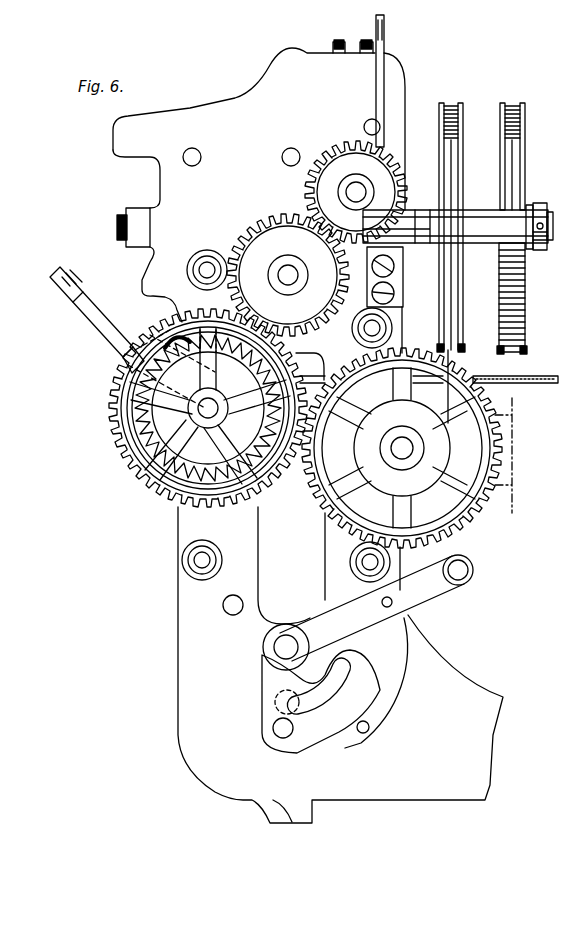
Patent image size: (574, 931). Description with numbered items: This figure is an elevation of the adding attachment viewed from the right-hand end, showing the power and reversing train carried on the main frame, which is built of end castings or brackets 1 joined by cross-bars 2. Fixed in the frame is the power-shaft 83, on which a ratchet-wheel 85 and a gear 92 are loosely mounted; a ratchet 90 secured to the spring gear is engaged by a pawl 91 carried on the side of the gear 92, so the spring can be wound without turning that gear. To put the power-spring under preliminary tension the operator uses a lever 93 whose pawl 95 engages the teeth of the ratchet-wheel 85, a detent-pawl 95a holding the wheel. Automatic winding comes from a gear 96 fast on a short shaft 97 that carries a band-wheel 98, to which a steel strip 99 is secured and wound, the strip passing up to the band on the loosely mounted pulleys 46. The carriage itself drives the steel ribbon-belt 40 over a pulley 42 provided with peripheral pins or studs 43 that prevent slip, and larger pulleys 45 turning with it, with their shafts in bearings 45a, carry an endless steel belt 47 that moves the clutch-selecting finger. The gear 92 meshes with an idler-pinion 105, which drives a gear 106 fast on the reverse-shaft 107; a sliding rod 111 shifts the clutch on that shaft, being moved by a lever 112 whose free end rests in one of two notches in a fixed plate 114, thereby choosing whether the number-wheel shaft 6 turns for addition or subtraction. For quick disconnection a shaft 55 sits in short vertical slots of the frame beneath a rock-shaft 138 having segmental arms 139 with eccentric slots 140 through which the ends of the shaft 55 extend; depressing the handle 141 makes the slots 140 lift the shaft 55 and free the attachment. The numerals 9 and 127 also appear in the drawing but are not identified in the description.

The casting or bracket 1 is at (163, 650).
The cross-bar 2 is at (140, 216).
The number-wheel shaft 6 is at (291, 154).
The ratchet gear 9 is at (106, 409).
The steel ribbon-belt 40 is at (544, 218).
The pulley 42 is at (536, 252).
The peripheral pin or stud 43 is at (531, 207).
The larger pulley 45 is at (515, 330).
The bearing 45a is at (403, 255).
The pulley 46 is at (455, 259).
The endless steel belt 47 is at (511, 106).
The shaft 55 is at (272, 729).
The power-shaft 83 is at (220, 402).
The ratchet-wheel 85 is at (128, 430).
The ratchet 90 is at (150, 462).
The pawl 91 is at (210, 406).
The gear 92 is at (208, 422).
The lever 93 is at (91, 312).
The pawl 95 is at (122, 372).
The detent-pawl 95a is at (172, 330).
The gear 96 is at (470, 506).
The short shaft 97 is at (398, 449).
The band-wheel 98 is at (402, 448).
The steel strip 99 is at (452, 106).
The idler-pinion 105 is at (268, 268).
The gear 106 is at (356, 183).
The reverse-shaft 107 is at (354, 194).
The sliding rod 111 is at (368, 121).
The lever 112 is at (386, 55).
The fixed plate 114 is at (357, 54).
The rod 127 is at (526, 384).
The rock-shaft 138 is at (286, 640).
The segmental arm 139 is at (313, 686).
The eccentric slot 140 is at (330, 715).
The handle 141 is at (376, 608).